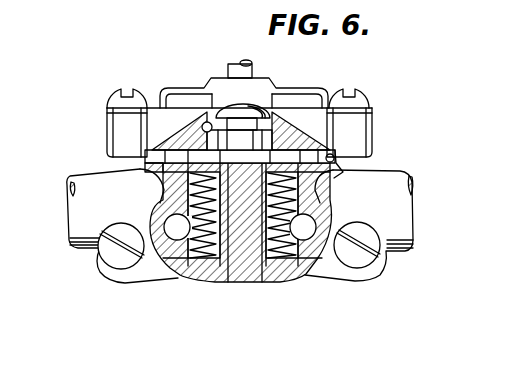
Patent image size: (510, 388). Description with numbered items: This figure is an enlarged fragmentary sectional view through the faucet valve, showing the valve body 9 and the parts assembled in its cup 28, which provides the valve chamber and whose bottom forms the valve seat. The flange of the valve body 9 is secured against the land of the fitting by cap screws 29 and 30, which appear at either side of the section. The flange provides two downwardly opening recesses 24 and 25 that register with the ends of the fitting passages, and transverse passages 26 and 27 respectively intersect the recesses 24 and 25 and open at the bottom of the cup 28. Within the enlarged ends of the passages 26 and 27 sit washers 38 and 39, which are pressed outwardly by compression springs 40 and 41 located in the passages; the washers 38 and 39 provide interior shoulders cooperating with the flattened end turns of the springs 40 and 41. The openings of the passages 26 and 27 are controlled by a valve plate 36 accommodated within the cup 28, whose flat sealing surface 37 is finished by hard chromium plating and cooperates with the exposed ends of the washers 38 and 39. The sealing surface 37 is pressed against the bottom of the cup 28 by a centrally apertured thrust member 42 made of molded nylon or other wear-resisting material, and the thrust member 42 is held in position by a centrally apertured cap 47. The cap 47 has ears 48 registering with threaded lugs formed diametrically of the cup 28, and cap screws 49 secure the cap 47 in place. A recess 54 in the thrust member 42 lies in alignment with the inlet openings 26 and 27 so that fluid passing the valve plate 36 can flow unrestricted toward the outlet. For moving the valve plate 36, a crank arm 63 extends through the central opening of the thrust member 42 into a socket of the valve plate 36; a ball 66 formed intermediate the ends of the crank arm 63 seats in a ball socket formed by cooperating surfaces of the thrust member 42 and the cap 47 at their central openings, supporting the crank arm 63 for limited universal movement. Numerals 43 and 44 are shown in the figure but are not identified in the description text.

The valve body 9 is at (232, 283).
The downwardly opening recess 24 is at (147, 212).
The downwardly opening recess 25 is at (310, 214).
The transverse passage 26 is at (207, 252).
The transverse passage 27 is at (287, 250).
The cup 28 is at (340, 178).
The cap screw 29 is at (112, 258).
The cap screw 30 is at (362, 262).
The valve plate 36 is at (262, 152).
The flat sealing surface 37 is at (237, 160).
The washer 38 is at (170, 183).
The washer 39 is at (297, 183).
The compression spring 40 is at (190, 252).
The compression spring 41 is at (238, 252).
The thrust member 42 is at (170, 147).
The plate 43 is at (145, 162).
The right clamp block 44 is at (335, 157).
The cap 47 is at (178, 92).
The ear 48 is at (107, 107).
The cap screw 49 is at (122, 98).
The recess 54 is at (202, 122).
The crank arm 63 is at (253, 66).
The ball 66 is at (229, 116).